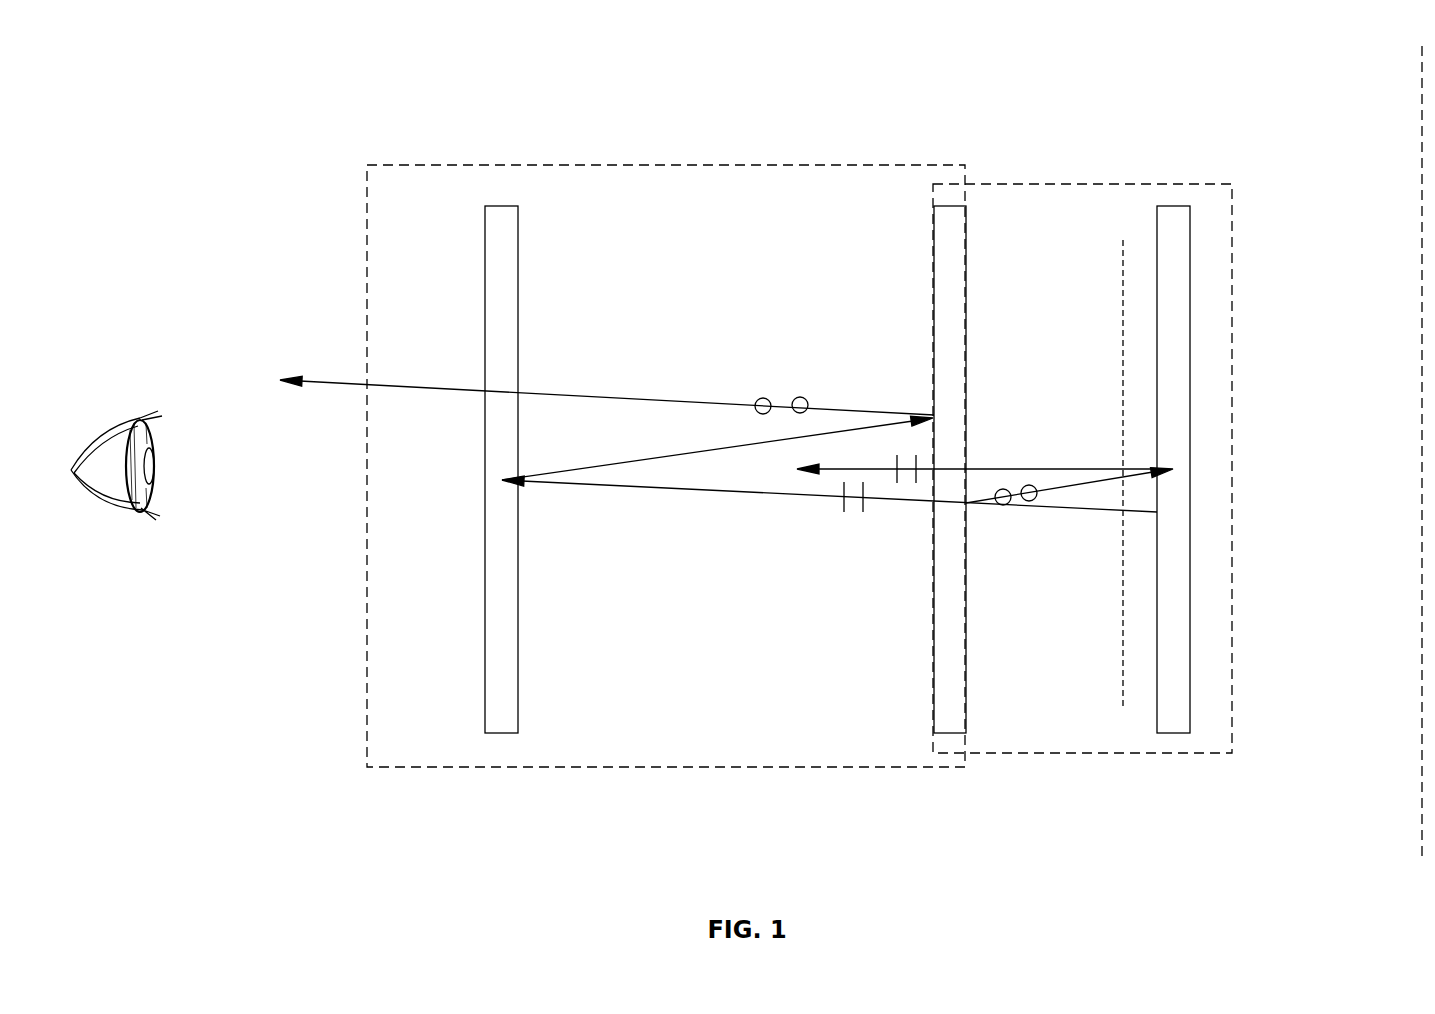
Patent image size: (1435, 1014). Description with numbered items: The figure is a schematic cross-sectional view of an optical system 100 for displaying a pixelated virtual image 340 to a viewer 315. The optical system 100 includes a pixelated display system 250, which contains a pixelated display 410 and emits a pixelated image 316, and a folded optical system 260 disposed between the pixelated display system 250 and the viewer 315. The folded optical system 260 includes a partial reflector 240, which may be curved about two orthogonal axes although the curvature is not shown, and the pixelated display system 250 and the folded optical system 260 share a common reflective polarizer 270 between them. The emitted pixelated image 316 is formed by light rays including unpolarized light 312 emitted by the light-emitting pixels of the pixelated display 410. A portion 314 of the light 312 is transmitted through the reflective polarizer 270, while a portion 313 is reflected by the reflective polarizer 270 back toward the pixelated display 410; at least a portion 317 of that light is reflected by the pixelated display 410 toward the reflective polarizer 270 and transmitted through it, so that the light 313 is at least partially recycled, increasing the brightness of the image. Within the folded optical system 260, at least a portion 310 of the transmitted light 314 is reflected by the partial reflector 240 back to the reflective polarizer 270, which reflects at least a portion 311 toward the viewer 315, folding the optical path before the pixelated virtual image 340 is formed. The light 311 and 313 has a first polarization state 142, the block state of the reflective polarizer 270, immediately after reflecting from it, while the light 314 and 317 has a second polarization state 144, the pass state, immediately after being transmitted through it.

The optical system 100 is at (208, 97).
The first polarization state 142 is at (762, 398).
The second polarization state 144 is at (863, 502).
The partial reflector 240 is at (503, 238).
The pixelated display system 250 is at (933, 778).
The folded optical system 260 is at (367, 813).
The common reflective polarizer 270 is at (953, 241).
The light 310 is at (633, 458).
The light 311 is at (607, 397).
The light 312 is at (1077, 510).
The light 313 is at (1100, 468).
The light 314 is at (735, 493).
The viewer 315 is at (130, 514).
The emitted pixelated image 316 is at (1122, 285).
The light 317 is at (995, 468).
The pixelated virtual image 340 is at (1420, 365).
The pixelated display 410 is at (1163, 232).